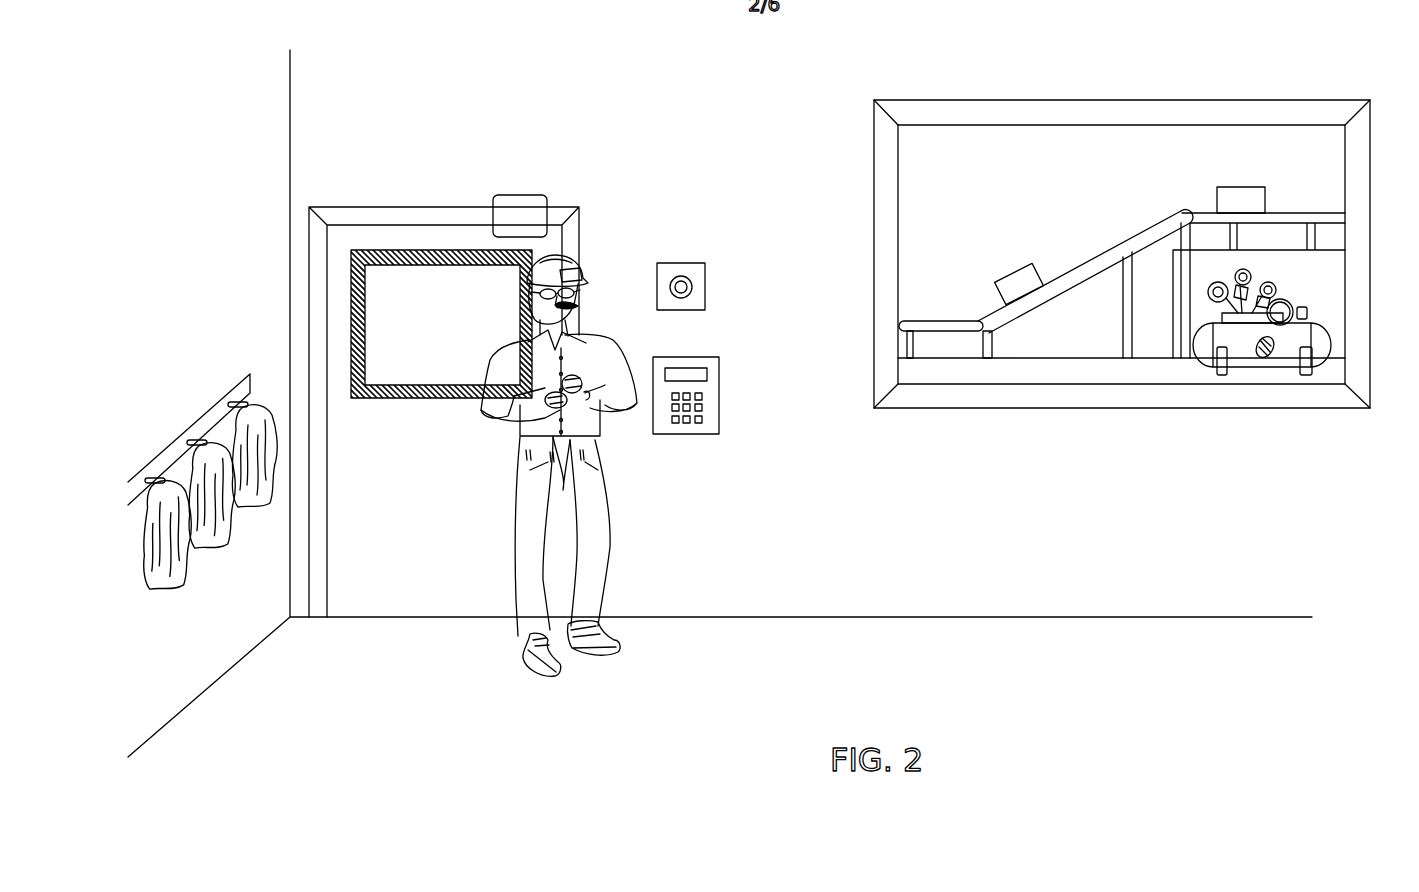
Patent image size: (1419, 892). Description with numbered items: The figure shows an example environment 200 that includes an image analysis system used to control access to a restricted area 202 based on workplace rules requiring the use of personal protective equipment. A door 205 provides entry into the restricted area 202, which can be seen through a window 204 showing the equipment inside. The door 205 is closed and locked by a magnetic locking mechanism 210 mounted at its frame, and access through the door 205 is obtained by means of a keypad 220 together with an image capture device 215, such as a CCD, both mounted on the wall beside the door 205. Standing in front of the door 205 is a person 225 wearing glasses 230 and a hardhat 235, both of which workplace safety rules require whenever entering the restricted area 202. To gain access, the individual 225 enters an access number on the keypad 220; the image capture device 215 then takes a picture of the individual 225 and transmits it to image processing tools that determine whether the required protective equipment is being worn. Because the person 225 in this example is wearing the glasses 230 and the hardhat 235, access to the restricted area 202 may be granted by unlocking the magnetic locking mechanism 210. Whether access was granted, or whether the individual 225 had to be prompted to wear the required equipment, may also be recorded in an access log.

The environment 200 is at (1122, 208).
The restricted area 202 is at (1313, 160).
The window 204 is at (1227, 100).
The door 205 is at (390, 207).
The magnetic locking mechanism 210 is at (520, 196).
The image capture device 215 is at (682, 262).
The keypad 220 is at (682, 435).
The person 225 is at (602, 418).
The glasses 230 is at (597, 282).
The hardhat 235 is at (528, 263).